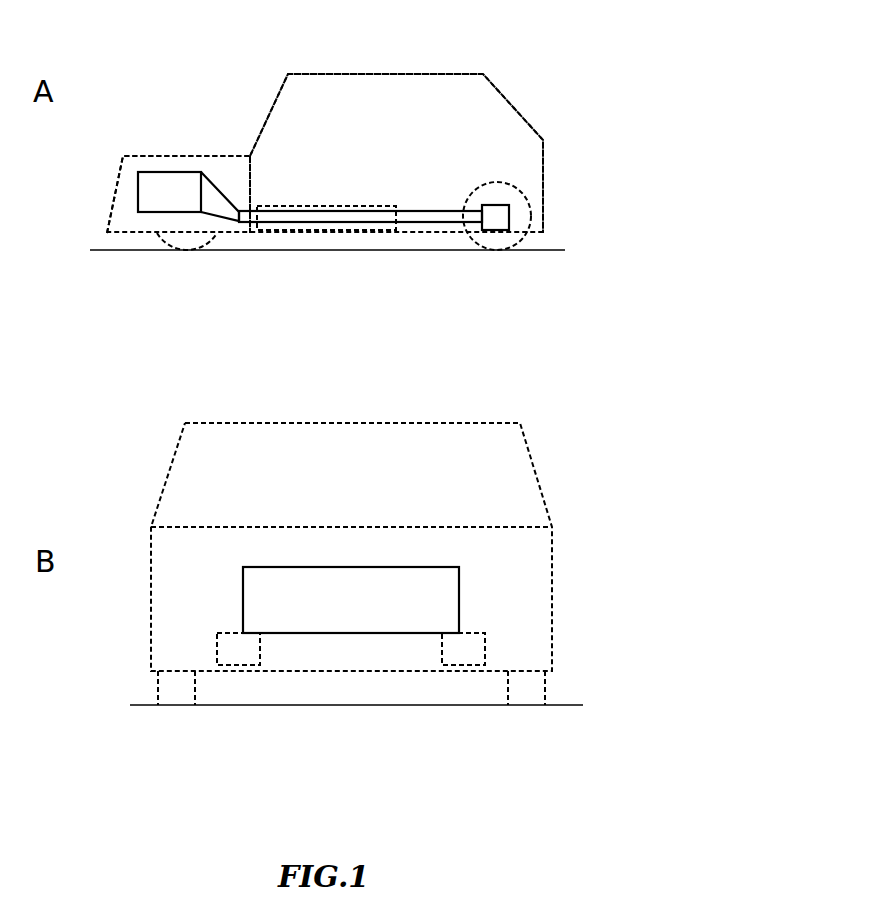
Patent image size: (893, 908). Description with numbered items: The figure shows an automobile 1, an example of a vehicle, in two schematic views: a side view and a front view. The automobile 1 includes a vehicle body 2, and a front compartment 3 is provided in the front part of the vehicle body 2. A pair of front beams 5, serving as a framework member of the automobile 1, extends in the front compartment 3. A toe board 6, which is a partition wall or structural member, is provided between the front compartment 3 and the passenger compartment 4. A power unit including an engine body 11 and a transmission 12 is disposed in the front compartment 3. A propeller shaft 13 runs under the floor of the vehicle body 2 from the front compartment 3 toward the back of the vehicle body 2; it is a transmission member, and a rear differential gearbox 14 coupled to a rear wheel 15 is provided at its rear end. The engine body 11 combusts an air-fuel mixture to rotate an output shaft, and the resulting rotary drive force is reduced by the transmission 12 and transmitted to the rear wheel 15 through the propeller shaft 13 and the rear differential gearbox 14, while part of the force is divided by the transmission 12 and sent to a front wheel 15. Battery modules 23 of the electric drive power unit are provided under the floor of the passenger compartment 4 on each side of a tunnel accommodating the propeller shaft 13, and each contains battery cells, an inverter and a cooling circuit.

The automobile 1 is at (175, 63).
The vehicle body 2 is at (267, 122).
The front compartment 3 is at (197, 155).
The passenger compartment 4 is at (396, 88).
The front beams 5 is at (236, 665).
The toe board 6 is at (250, 165).
The engine body 11 is at (163, 182).
The transmission 12 is at (229, 208).
The propeller shaft 13 is at (423, 213).
The rear differential gearbox 14 is at (500, 220).
The wheel 15 is at (180, 247).
The battery modules 23 is at (300, 225).